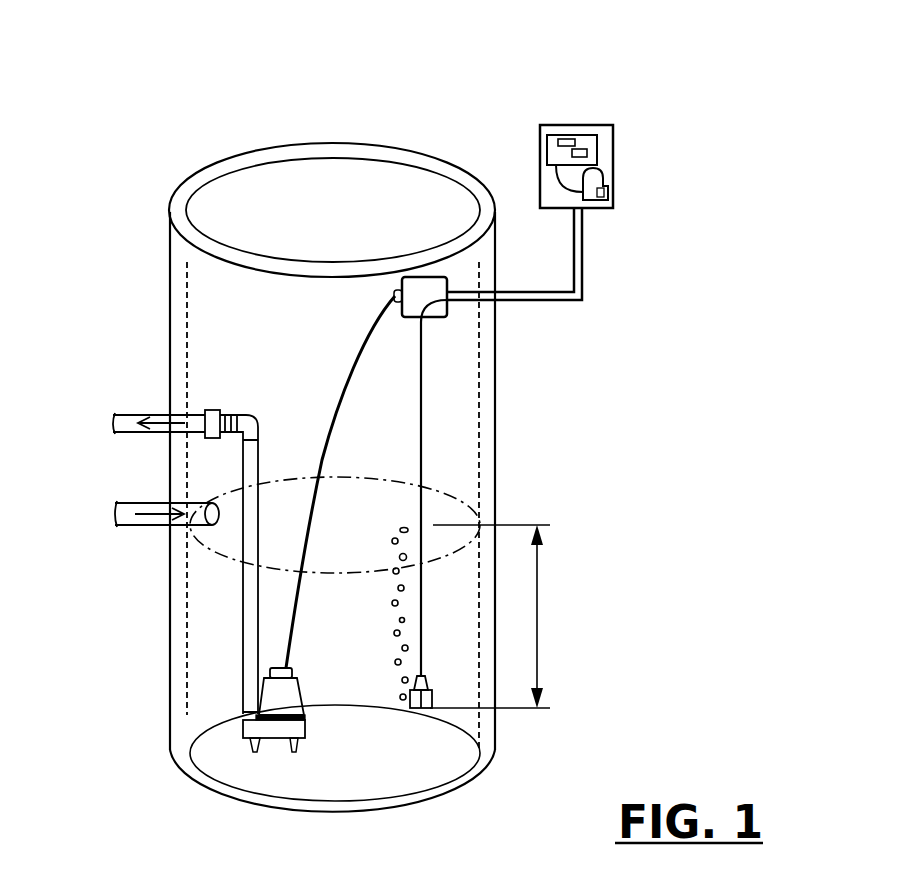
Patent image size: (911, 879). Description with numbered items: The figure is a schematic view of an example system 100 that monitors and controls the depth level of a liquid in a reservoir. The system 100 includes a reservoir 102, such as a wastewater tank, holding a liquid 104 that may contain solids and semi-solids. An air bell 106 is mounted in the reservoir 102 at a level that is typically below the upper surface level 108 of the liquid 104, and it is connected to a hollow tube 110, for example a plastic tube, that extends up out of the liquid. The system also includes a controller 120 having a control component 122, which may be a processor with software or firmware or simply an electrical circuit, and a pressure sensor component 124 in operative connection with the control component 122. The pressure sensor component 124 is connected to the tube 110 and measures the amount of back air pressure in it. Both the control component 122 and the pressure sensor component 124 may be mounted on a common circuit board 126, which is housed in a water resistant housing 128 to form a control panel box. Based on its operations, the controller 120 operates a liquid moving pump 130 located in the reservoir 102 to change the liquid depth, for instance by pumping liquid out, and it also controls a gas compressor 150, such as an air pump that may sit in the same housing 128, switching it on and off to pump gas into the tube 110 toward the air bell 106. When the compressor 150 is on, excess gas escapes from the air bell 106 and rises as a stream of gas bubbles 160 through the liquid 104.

The system 100 is at (760, 122).
The reservoir 102 is at (175, 675).
The liquid 104 is at (210, 586).
The air bell 106 is at (433, 693).
The upper surface level 108 is at (352, 572).
The hollow tube 110 is at (420, 442).
The controller 120 is at (592, 144).
The control component 122 is at (588, 152).
The pressure sensor component 124 is at (560, 160).
The common circuit board 126 is at (586, 134).
The water resistant housing 128 is at (550, 124).
The liquid moving pump 130 is at (288, 731).
The gas compressor 150 is at (612, 182).
The gas bubbles 160 is at (372, 632).